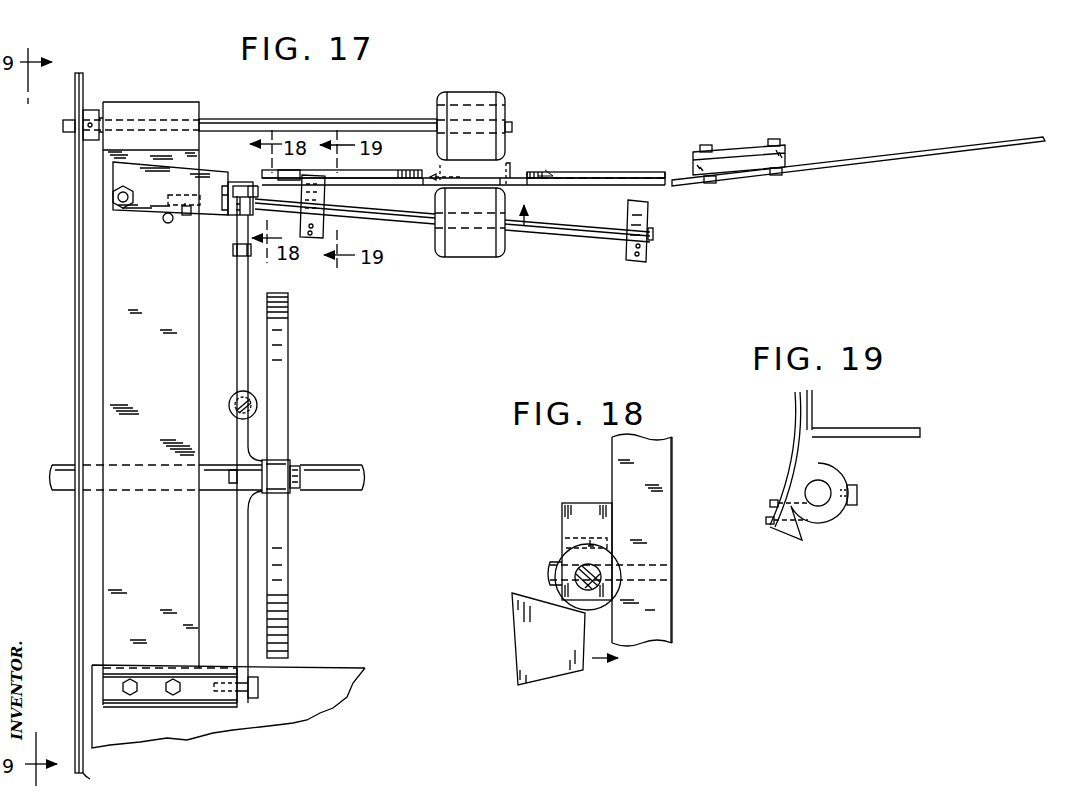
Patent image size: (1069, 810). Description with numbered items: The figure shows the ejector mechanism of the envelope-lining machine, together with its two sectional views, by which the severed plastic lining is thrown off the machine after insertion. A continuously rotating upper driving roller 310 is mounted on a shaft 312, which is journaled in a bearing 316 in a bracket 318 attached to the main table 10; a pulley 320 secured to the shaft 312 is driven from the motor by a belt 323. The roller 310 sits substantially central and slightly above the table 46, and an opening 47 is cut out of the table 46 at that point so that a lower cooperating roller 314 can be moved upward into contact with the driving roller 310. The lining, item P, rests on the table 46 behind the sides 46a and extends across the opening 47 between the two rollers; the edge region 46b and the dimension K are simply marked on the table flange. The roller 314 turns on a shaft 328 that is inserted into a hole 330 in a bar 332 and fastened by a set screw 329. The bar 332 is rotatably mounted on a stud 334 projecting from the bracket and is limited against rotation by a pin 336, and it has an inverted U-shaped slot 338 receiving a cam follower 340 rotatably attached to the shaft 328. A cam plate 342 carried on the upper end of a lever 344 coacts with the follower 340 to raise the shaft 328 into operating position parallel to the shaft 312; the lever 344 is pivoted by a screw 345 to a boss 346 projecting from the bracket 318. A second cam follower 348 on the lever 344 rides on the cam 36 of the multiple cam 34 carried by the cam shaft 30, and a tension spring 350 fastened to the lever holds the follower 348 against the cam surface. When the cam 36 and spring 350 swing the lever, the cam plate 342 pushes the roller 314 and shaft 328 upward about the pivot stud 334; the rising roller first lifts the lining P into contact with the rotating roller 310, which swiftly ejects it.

In FIG. 17, the table 10 is at (342, 668).
In FIG. 17, the cam shaft 30 is at (340, 473).
In FIG. 17, the multiple cam 34 is at (299, 548).
In FIG. 17, the cam 36 is at (284, 346).
In FIG. 17, the table 46 is at (556, 185).
In FIG. 19, the table 46 is at (857, 437).
In FIG. 17, the sides 46a is at (390, 172).
In FIG. 19, the sides 46a is at (812, 399).
In FIG. 17, the angle bar stop 46b is at (290, 171).
In FIG. 17, the opening 47 is at (514, 175).
In FIG. 17, the upper driving roller 310 is at (484, 93).
In FIG. 17, the shaft 312 is at (313, 119).
In FIG. 17, the lower cooperating roller 314 is at (462, 240).
In FIG. 17, the bearing 316 is at (147, 102).
In FIG. 17, the bracket 318 is at (152, 345).
In FIG. 18, the bracket 318 is at (674, 552).
In FIG. 17, the pulley 320 is at (75, 162).
In FIG. 17, the belt 323 is at (77, 388).
In FIG. 17, the shaft 328 is at (536, 237).
In FIG. 18, the shaft 328 is at (592, 572).
In FIG. 19, the shaft 328 is at (820, 500).
In FIG. 17, the set screw 329 is at (186, 216).
In FIG. 17, the hole 330 is at (242, 212).
In FIG. 17, the bar 332 is at (113, 178).
In FIG. 18, the bar 332 is at (580, 503).
In FIG. 17, the stud 334 is at (113, 200).
In FIG. 18, the stud 334 is at (550, 569).
In FIG. 17, the pin 336 is at (162, 221).
In FIG. 17, the inverted U-shaped slot 338 is at (233, 186).
In FIG. 18, the inverted U-shaped slot 338 is at (562, 514).
In FIG. 17, the cam follower 340 is at (256, 194).
In FIG. 18, the cam follower 340 is at (600, 607).
In FIG. 17, the cam plate 342 is at (239, 243).
In FIG. 18, the cam plate 342 is at (512, 640).
In FIG. 17, the lever 344 is at (240, 338).
In FIG. 17, the screw 345 is at (259, 689).
In FIG. 17, the boss 346 is at (196, 692).
In FIG. 17, the cam follower 348 is at (276, 460).
In FIG. 17, the tension spring 350 is at (230, 404).
In FIG. 17, the item to be ejected P is at (555, 163).
In FIG. 17, the gap K is at (428, 185).